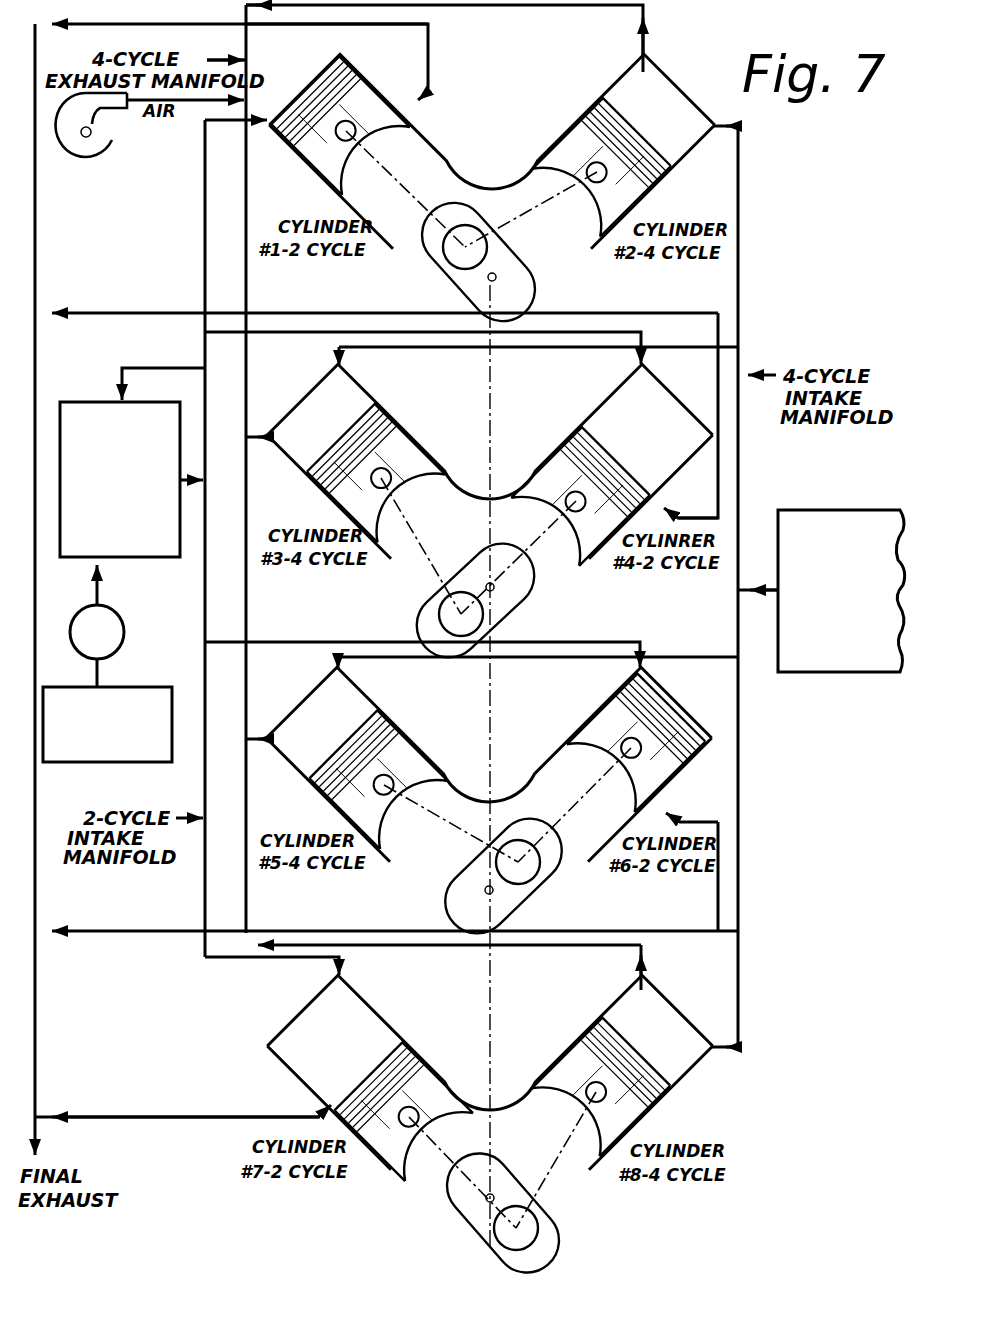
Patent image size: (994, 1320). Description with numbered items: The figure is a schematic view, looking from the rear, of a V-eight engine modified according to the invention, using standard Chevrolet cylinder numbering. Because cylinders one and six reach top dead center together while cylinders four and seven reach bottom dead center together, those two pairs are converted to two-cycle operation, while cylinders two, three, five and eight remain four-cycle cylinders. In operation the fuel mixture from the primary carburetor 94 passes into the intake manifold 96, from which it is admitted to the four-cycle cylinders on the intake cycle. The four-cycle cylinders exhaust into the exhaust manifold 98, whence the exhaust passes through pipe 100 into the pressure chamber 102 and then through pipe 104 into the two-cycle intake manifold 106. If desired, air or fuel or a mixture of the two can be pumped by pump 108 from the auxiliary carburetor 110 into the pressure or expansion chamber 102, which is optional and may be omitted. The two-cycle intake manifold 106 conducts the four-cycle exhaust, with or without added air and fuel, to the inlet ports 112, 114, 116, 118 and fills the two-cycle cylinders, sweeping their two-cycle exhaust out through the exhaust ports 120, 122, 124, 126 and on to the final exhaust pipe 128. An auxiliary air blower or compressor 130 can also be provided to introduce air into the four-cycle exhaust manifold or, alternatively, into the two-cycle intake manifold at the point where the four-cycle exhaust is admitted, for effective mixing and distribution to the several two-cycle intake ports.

The primary carburetor 94 is at (842, 675).
The intake manifold 96 is at (738, 283).
The exhaust manifold 98 is at (273, 898).
The pipe 100 is at (168, 366).
The pressure chamber 102 is at (83, 400).
The pipe 104 is at (188, 488).
The 2-cycle intake manifold 106 is at (205, 592).
The pump 108 is at (125, 627).
The auxiliary carburetor 110 is at (122, 686).
The inlet port 112 is at (266, 116).
The inlet port 114 is at (632, 362).
The inlet port 116 is at (632, 670).
The inlet port 118 is at (345, 970).
The exhaust port 120 is at (412, 102).
The exhaust port 122 is at (668, 502).
The exhaust port 124 is at (670, 805).
The exhaust port 126 is at (313, 1107).
The final exhaust pipe 128 is at (35, 1030).
The auxiliary air blower 130 is at (92, 160).